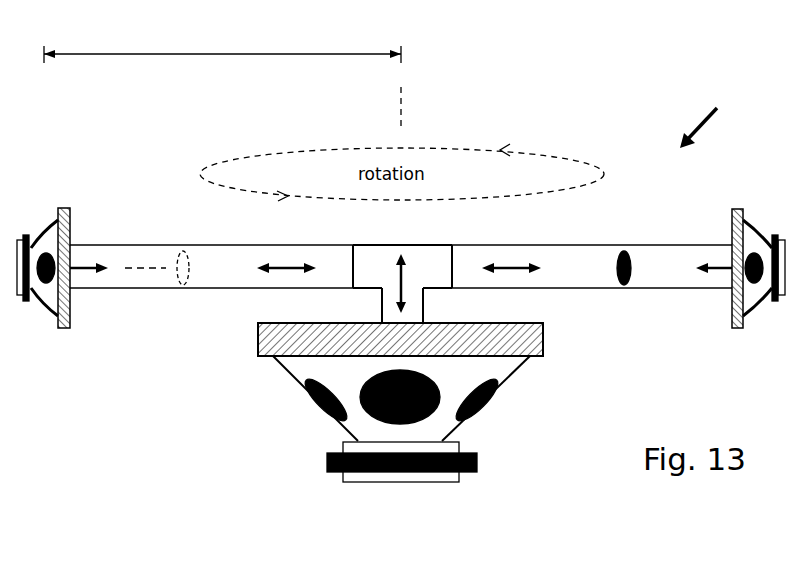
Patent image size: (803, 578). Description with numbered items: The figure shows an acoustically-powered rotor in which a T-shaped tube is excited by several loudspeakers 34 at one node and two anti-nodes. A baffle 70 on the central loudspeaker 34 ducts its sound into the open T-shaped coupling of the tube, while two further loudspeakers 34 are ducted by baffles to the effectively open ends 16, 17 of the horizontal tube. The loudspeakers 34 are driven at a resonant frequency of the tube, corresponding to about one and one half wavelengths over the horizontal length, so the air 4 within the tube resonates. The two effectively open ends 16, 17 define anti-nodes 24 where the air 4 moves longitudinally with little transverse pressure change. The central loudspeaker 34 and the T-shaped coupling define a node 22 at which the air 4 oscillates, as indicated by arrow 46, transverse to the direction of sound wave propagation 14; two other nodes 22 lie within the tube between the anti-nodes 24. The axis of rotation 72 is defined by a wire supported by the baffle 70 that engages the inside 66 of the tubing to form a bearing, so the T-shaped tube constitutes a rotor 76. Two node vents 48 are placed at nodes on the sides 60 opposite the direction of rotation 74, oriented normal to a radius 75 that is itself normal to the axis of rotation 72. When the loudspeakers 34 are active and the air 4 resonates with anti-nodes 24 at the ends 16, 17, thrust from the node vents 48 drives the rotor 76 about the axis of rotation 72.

The air 4 is at (550, 260).
The direction of sound wave propagation 14 is at (148, 272).
The effectively open end 16 is at (68, 252).
The effectively open end 17 is at (731, 245).
The node 22 is at (395, 275).
The anti-node 24 is at (75, 276).
The loudspeaker 34 is at (52, 302).
The arrow 46 is at (398, 275).
The node vent 48 is at (395, 242).
The side opposite to the direction of rotation 60 is at (180, 258).
The inside of the T-shaped tubing 66 is at (407, 248).
The baffle 70 is at (258, 350).
The axis of rotation 72 is at (401, 106).
The direction of rotation 74 is at (570, 158).
The radius 75 is at (205, 54).
The rotor 76 is at (704, 120).